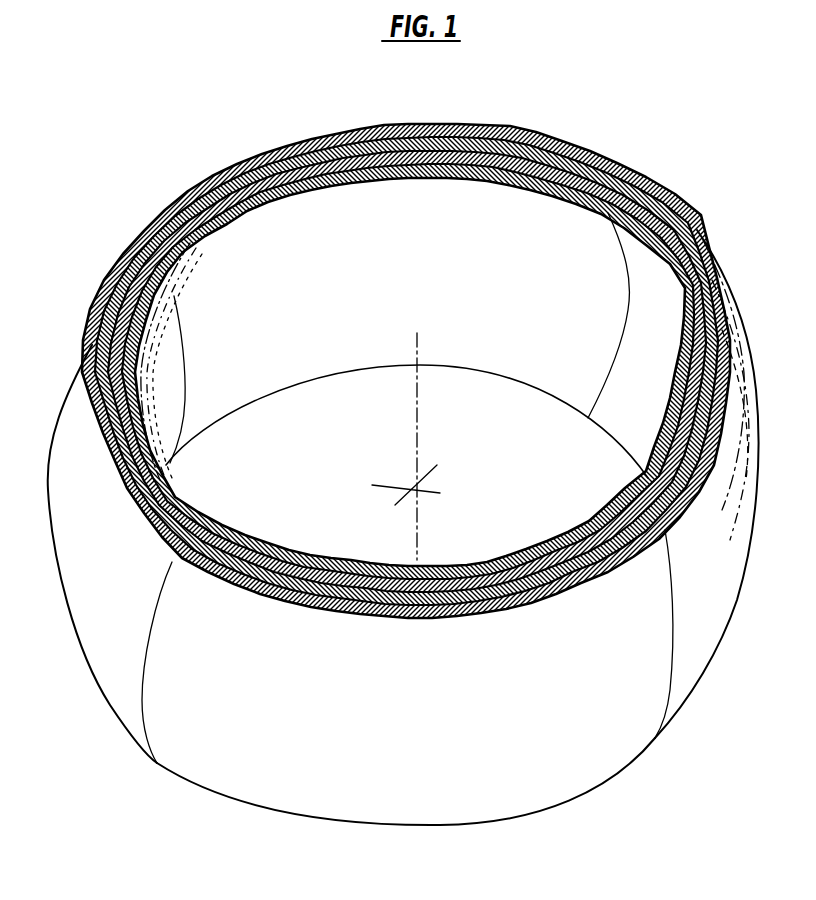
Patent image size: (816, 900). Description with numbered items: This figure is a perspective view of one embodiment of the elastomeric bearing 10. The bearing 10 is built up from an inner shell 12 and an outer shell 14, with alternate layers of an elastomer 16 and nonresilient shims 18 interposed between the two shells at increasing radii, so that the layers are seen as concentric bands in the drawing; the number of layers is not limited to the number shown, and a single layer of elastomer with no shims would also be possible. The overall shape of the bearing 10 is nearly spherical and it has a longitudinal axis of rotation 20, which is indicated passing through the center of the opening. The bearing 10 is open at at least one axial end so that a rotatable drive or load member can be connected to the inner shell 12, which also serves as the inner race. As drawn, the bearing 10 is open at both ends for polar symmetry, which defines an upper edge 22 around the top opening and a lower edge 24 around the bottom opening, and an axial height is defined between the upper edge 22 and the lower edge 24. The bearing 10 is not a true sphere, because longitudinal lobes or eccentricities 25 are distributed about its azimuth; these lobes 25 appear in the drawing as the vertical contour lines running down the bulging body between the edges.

The elastomeric bearing 10 is at (146, 184).
The inner shell 12 is at (223, 525).
The outer shell 14 is at (238, 537).
The elastomer layer 16 is at (268, 555).
The nonresilient shims 18 is at (303, 565).
The longitudinal axis of rotation 20 is at (417, 340).
The upper edge 22 is at (343, 185).
The lower edge 24 is at (352, 385).
The longitudinal lobes or eccentricities 25 is at (175, 342).